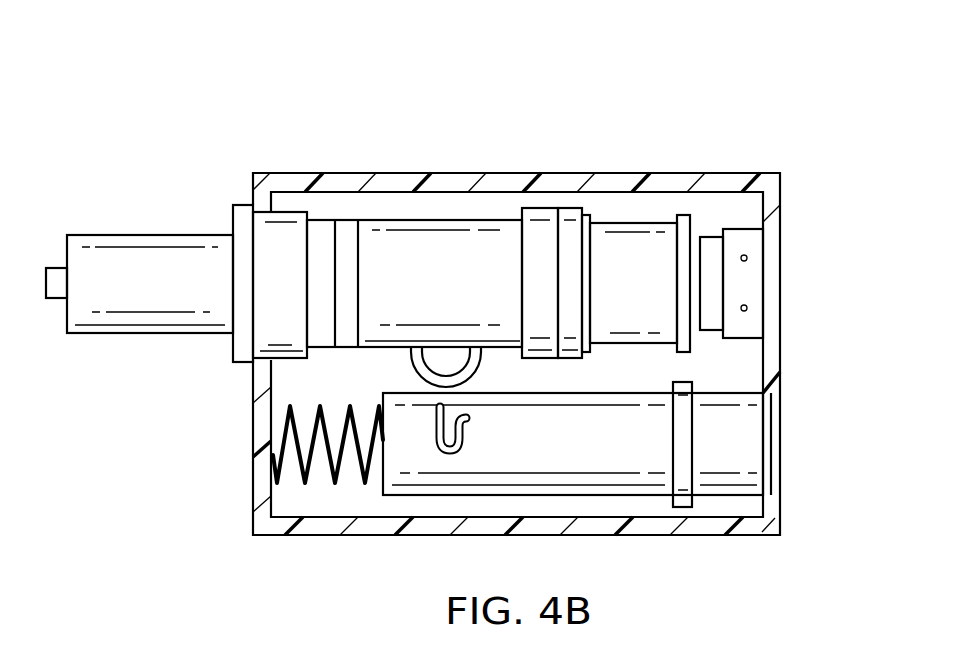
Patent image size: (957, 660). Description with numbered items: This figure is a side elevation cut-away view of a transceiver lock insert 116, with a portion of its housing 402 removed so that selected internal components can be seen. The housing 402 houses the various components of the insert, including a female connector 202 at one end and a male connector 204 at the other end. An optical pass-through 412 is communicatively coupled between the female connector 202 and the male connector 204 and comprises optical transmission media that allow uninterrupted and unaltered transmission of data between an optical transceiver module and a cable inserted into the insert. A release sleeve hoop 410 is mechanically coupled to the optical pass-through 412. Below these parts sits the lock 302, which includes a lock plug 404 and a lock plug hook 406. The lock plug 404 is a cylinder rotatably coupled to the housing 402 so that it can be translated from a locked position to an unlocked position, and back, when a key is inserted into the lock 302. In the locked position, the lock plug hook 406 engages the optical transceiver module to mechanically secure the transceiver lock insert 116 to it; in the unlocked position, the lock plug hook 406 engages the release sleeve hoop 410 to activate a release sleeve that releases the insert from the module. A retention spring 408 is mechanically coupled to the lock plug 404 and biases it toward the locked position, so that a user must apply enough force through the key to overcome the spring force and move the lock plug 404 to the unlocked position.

The transceiver lock insert 116 is at (247, 94).
The housing 402 is at (627, 164).
The male connector 204 is at (113, 233).
The optical pass-through 412 is at (458, 242).
The female connector 202 is at (763, 229).
The release sleeve hoop 410 is at (412, 362).
The retention spring 408 is at (327, 483).
The lock plug 404 is at (637, 467).
The lock plug hook 406 is at (465, 437).
The lock 302 is at (771, 495).